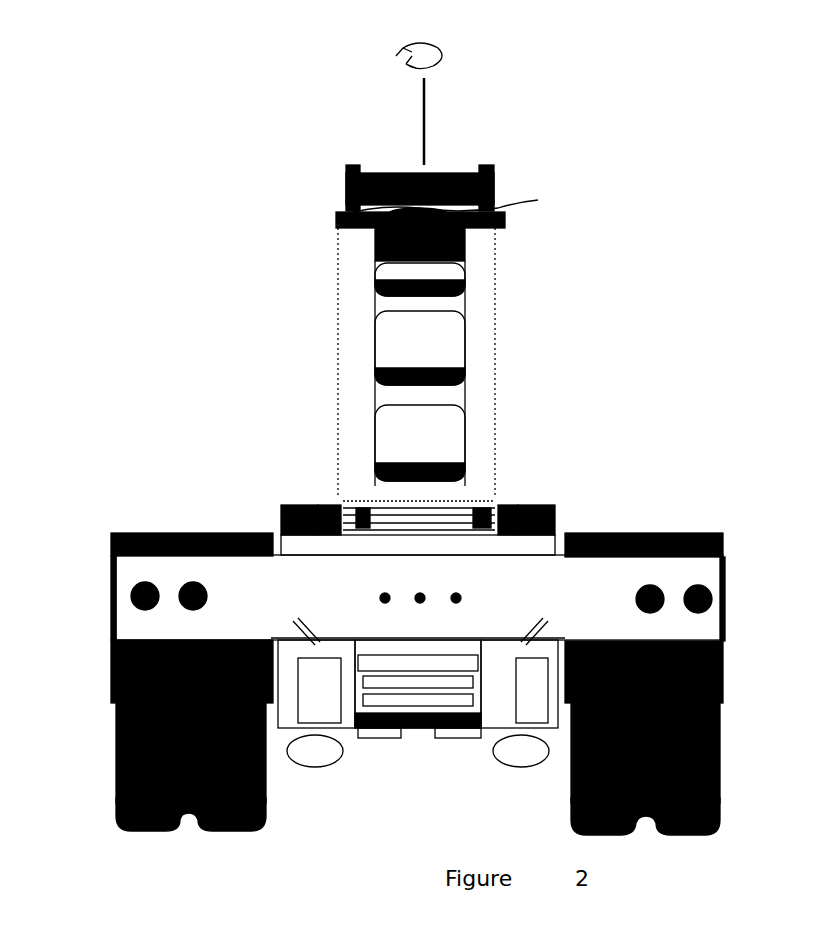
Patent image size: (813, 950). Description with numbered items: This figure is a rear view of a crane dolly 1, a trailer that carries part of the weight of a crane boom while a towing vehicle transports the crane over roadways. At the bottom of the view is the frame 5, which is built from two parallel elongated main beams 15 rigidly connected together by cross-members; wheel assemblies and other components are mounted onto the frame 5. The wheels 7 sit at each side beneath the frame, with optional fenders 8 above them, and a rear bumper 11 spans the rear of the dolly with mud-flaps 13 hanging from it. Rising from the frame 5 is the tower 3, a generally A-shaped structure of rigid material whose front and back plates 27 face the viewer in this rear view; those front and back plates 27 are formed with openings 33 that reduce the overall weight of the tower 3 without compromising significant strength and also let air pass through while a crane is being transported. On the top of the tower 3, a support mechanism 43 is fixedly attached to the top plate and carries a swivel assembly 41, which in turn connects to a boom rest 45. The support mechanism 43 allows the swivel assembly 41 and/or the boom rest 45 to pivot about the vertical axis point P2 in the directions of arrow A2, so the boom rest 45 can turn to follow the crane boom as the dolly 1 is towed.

The crane dolly 1 is at (680, 213).
The arrow A2 is at (445, 42).
The vertical axis point P2 is at (420, 84).
The boom rest 45 is at (445, 162).
The swivel assembly 41 is at (453, 203).
The support mechanism 43 is at (370, 205).
The front and back plates 27 is at (472, 300).
The tower 3 is at (490, 324).
The openings 33 is at (407, 260).
The frame 5 is at (538, 495).
The main beams 15 is at (287, 497).
The fenders 8 is at (140, 523).
The rear bumper 11 is at (707, 567).
The mud-flaps 13 is at (108, 715).
The wheels 7 is at (147, 823).